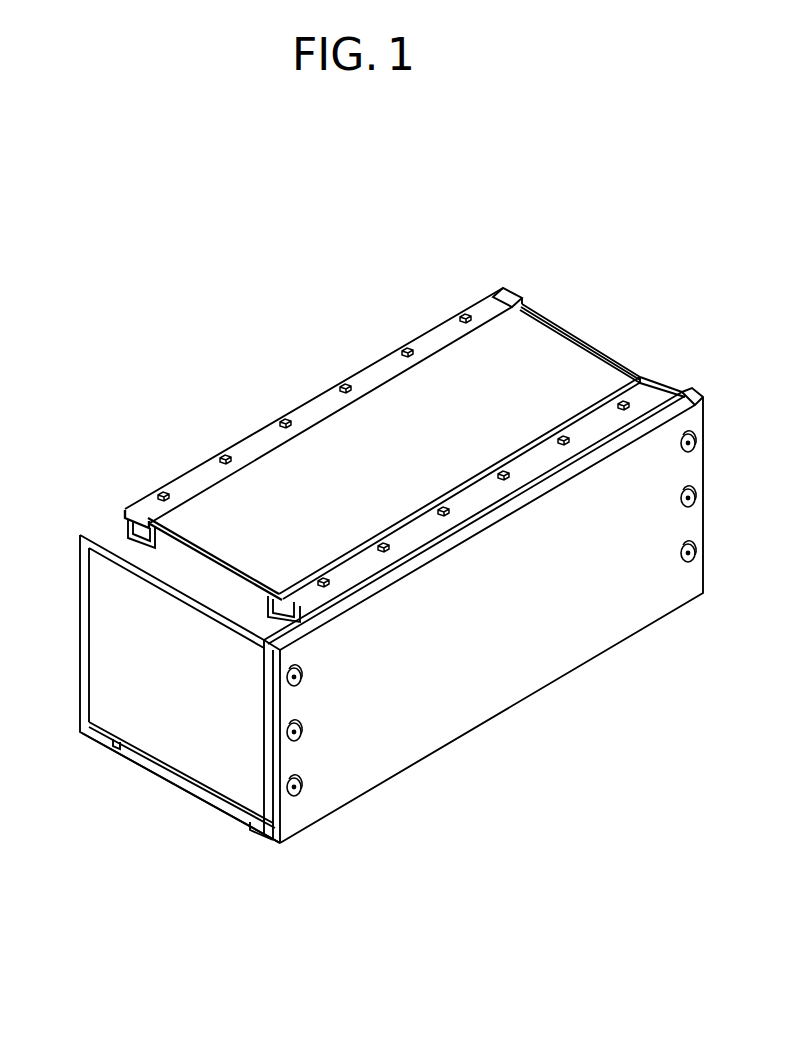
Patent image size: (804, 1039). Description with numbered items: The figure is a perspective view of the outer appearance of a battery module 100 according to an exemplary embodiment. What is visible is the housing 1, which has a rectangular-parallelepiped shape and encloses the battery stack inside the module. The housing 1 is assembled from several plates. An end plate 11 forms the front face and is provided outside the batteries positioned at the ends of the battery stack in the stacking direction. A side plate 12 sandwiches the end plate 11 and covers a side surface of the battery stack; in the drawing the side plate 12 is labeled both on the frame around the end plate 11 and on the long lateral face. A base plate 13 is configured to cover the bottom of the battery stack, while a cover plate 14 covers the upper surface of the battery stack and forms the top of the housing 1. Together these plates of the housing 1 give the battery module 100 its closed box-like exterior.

The battery module 100 is at (108, 259).
The housing 1 is at (170, 786).
The end plate 11 is at (132, 717).
The side plate 12 is at (80, 598).
The base plate 13 is at (223, 803).
The cover plate 14 is at (395, 398).